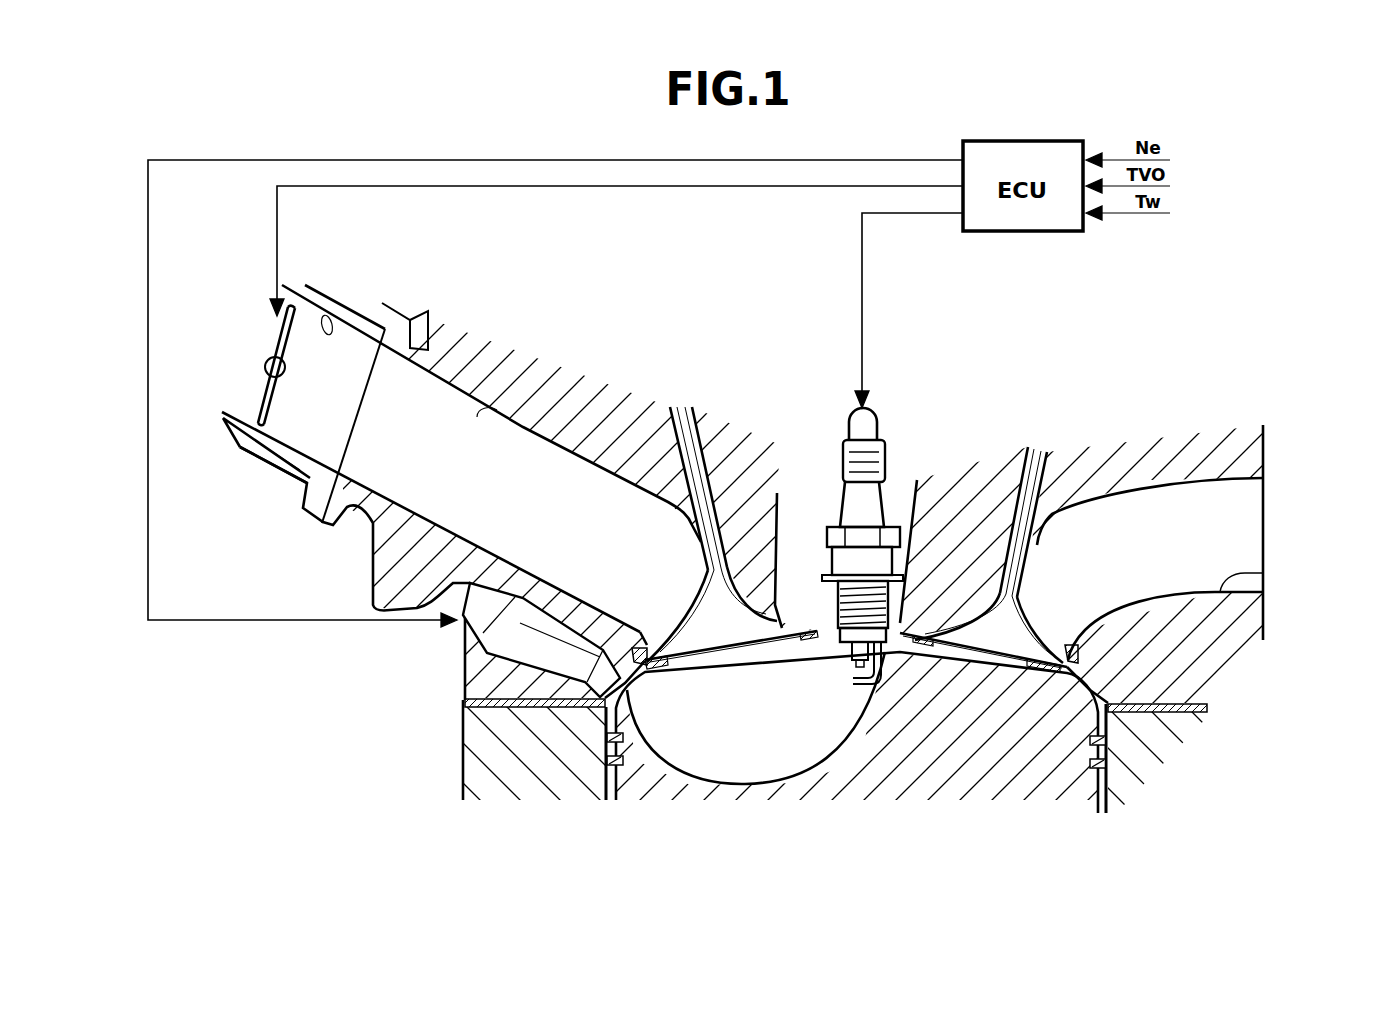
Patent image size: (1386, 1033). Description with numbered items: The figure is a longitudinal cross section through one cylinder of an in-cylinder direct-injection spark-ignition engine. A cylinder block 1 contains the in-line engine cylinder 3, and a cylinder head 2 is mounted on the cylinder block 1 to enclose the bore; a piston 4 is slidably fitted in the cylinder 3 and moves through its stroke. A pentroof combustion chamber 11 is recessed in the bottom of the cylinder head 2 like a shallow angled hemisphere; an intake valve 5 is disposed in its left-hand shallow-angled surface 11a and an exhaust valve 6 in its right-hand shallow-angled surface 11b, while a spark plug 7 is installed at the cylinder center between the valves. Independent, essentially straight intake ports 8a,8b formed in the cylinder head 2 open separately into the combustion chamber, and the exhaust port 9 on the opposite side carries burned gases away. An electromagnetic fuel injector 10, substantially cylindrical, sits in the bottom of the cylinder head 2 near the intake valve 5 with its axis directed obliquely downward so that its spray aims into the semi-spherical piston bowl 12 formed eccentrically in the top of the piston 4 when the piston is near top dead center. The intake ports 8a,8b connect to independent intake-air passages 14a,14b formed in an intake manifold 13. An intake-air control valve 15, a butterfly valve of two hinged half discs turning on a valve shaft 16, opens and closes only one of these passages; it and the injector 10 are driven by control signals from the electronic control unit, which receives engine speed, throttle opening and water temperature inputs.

The cylinder block 1 is at (1128, 772).
The cylinder head 2 is at (1250, 453).
The engine cylinder 3 is at (1098, 793).
The piston 4 is at (1023, 753).
The intake valve 5 is at (705, 590).
The exhaust valve 6 is at (1013, 585).
The spark plug 7 is at (888, 487).
The intake ports 8a,8b is at (487, 413).
The exhaust port 9 is at (1263, 574).
The fuel injector 10 is at (463, 623).
The pentroof combustion chamber 11 is at (993, 667).
The left-hand shallow-angled surface 11a is at (683, 670).
The right-hand shallow-angled surface 11b is at (943, 647).
The piston bowl 12 is at (742, 733).
The intake manifold 13 is at (263, 457).
The intake-air passages 14a,14b is at (332, 318).
The intake-air control valve 15 is at (280, 327).
The valve shaft 16 is at (265, 367).